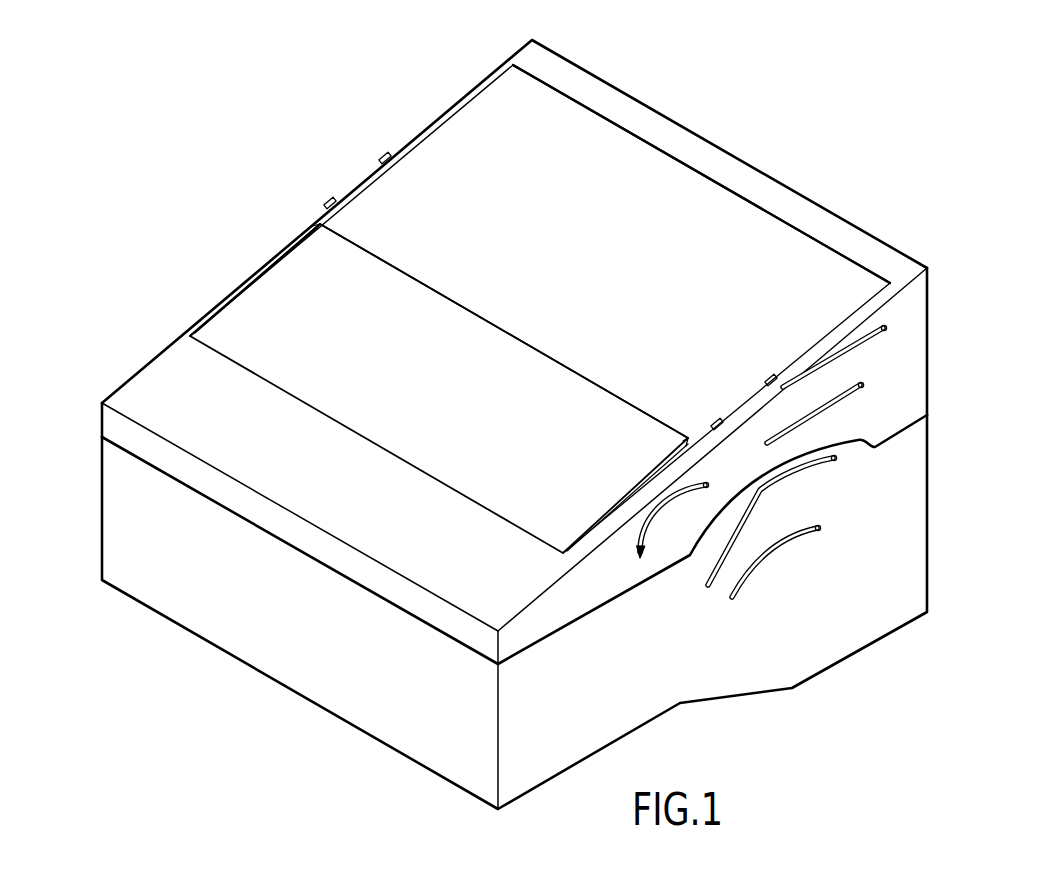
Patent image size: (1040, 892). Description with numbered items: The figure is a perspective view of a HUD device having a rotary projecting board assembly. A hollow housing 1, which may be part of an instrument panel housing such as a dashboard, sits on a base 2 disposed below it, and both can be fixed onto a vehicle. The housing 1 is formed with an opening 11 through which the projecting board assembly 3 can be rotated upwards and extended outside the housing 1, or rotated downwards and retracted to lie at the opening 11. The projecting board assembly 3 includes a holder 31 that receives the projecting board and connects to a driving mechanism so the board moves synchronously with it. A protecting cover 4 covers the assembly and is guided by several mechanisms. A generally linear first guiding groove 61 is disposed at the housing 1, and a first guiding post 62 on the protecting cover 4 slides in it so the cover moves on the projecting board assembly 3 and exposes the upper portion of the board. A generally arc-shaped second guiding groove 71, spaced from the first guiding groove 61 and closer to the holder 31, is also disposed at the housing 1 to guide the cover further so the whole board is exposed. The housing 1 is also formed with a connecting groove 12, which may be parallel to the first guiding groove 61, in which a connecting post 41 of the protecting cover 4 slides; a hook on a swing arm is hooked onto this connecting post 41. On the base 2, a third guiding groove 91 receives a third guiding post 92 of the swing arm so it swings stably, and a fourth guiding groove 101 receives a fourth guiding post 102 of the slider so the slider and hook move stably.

The housing 1 is at (930, 342).
The base 2 is at (930, 517).
The projecting board assembly 3 is at (277, 290).
The holder 31 is at (243, 330).
The protecting cover 4 is at (448, 155).
The opening 11 is at (293, 240).
The connecting groove 12 is at (828, 408).
The connecting post 41 is at (863, 385).
The first guiding groove 61 is at (843, 347).
The first guiding post 62 is at (886, 327).
The second guiding groove 71 is at (660, 507).
The third guiding groove 91 is at (775, 546).
The third guiding post 92 is at (810, 534).
The fourth guiding groove 101 is at (792, 475).
The fourth guiding post 102 is at (840, 461).